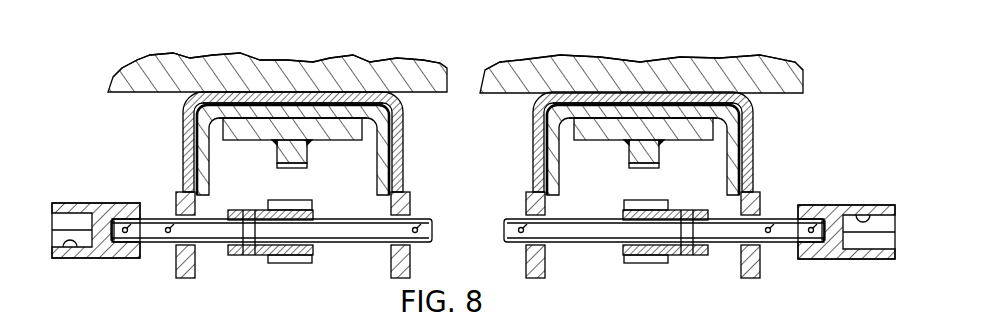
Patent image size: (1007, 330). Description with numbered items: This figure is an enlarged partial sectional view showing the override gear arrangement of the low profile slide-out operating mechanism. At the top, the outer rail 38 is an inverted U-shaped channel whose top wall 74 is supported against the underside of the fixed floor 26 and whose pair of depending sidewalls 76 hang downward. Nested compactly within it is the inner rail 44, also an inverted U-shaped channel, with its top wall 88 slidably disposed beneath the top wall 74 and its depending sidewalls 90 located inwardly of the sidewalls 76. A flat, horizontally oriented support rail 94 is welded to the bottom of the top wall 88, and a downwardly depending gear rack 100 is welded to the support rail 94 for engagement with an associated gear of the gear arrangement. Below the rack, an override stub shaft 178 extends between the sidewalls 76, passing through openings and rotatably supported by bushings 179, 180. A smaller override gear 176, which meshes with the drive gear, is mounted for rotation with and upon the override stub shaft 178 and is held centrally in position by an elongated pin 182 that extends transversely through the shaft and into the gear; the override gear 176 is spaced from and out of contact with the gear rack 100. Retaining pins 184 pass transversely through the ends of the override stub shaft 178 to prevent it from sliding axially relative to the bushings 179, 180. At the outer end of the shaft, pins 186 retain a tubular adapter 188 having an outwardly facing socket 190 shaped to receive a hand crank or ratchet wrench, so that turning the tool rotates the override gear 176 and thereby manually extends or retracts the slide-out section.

The fixed floor 26 is at (308, 72).
The outer rail 38 is at (347, 91).
The inner rail 44 is at (250, 110).
The top wall 74 is at (318, 97).
The sidewalls 76 is at (186, 106).
The top wall 88 is at (230, 115).
The sidewalls 90 is at (202, 154).
The support rail 94 is at (242, 137).
The gear rack 100 is at (306, 153).
The override gear 176 is at (284, 256).
The override stub shaft 178 is at (340, 237).
The bushing 179 is at (177, 207).
The bushing 180 is at (408, 213).
The elongated pin 182 is at (250, 253).
The retaining pins 184 is at (168, 234).
The pins 186 is at (113, 241).
The tubular adapter 188 is at (83, 203).
The socket 190 is at (72, 248).